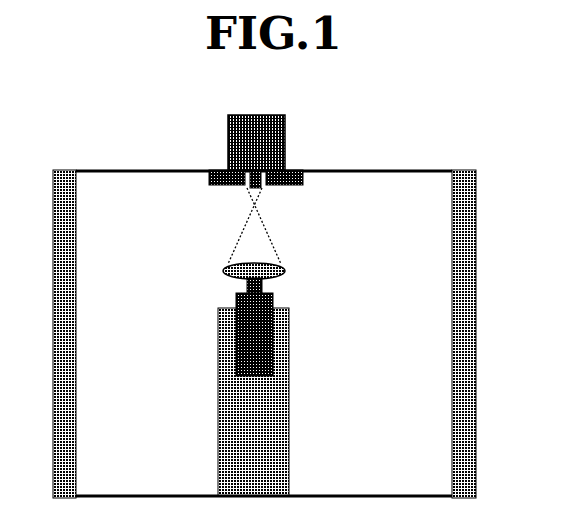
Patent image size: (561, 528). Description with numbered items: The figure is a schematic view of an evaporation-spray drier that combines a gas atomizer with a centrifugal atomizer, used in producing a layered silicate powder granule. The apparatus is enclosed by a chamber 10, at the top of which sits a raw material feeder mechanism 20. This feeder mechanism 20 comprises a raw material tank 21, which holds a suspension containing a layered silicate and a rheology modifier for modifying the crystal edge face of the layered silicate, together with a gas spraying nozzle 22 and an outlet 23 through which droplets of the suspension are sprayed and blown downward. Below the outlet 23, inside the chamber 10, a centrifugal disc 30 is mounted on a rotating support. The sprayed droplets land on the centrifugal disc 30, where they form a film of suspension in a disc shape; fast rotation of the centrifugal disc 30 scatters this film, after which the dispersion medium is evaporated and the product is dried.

The chamber 10 is at (91, 166).
The raw material feeder mechanism 20 is at (306, 151).
The raw material tank 21 is at (287, 134).
The gas spraying nozzle 22 is at (297, 167).
The outlet 23 is at (297, 184).
The centrifugal disc 30 is at (276, 266).